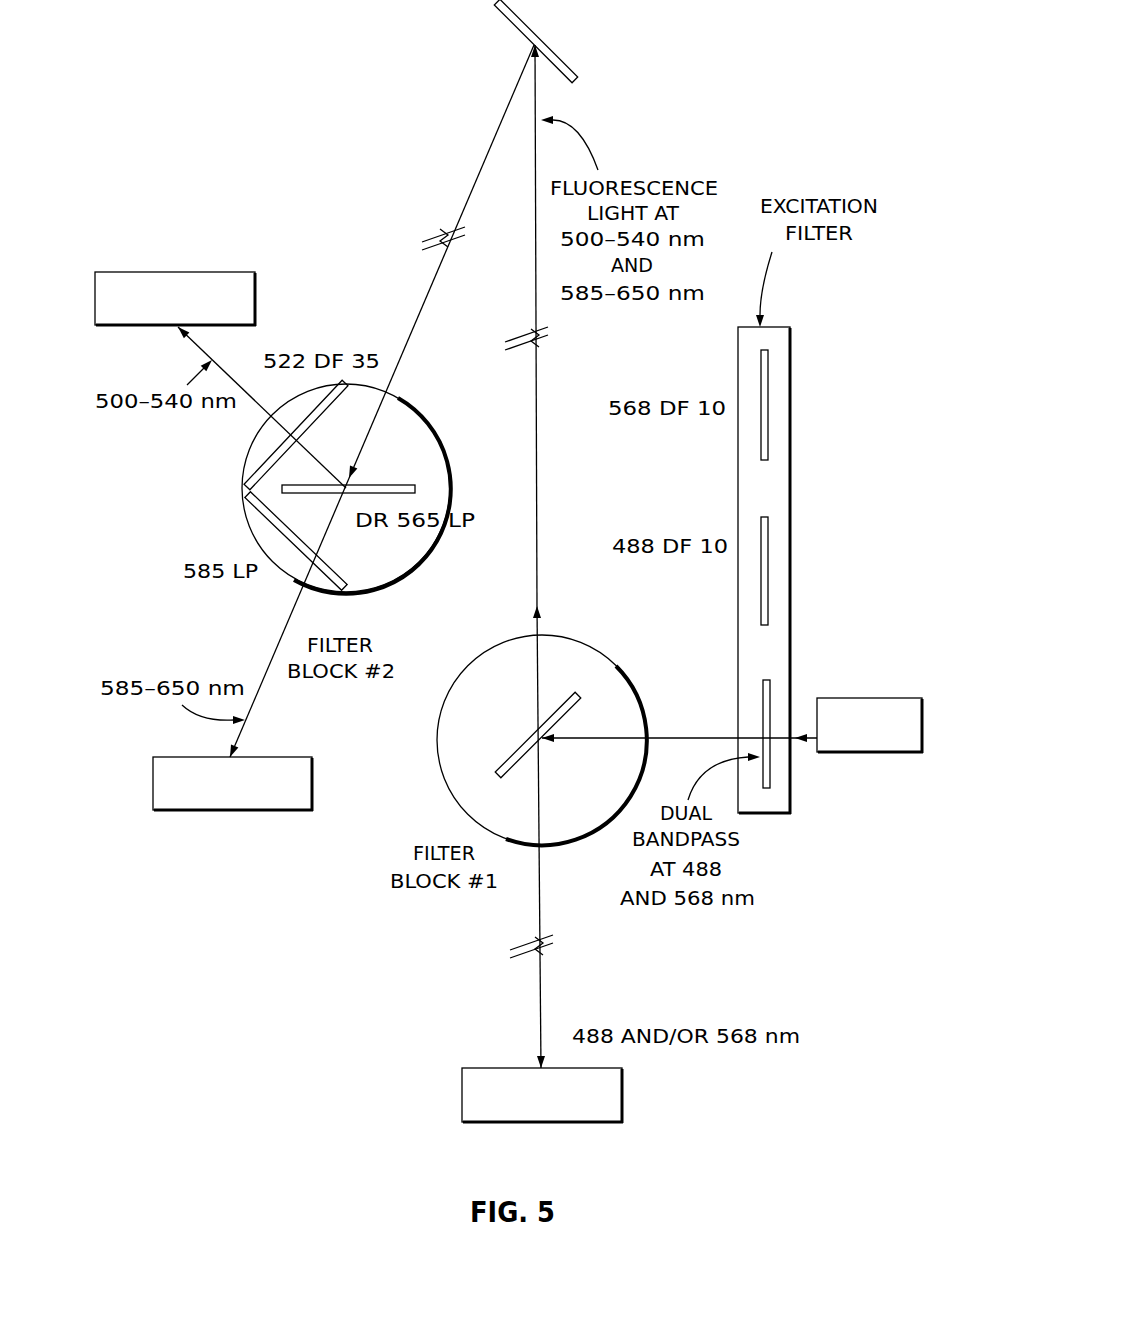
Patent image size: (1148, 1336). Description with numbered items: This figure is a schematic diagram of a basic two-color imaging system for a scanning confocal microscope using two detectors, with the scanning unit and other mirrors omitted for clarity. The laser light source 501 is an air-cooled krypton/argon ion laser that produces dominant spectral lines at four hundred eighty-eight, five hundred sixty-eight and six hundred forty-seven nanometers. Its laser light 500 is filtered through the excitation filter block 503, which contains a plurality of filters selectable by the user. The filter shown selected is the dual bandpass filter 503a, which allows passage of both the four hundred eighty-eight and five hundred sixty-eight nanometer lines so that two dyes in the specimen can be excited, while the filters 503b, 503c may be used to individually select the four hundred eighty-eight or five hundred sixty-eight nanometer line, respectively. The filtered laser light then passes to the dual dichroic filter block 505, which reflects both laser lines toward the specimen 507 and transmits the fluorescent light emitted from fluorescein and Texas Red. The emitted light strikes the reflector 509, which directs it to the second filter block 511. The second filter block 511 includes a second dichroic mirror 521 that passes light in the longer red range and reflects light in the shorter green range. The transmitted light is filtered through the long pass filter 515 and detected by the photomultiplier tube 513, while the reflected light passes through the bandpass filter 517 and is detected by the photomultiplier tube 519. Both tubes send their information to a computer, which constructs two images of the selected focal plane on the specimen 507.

The laser light 500 is at (688, 736).
The laser light source 501 is at (840, 698).
The excitation filter block 503 is at (799, 588).
The dual bandpass filter 503a is at (770, 695).
The filter 503b is at (768, 530).
The filter 503c is at (768, 366).
The dual dichroic filter block 505 is at (588, 645).
The specimen 507 is at (493, 1068).
The reflector 509 is at (563, 60).
The second filter block 511 is at (418, 410).
The photomultiplier tube 513 is at (280, 758).
The low pass filter 515 is at (325, 570).
The bandpass filter 517 is at (266, 460).
The photomultiplier tube 519 is at (222, 273).
The second dichroic mirror 521 is at (388, 486).